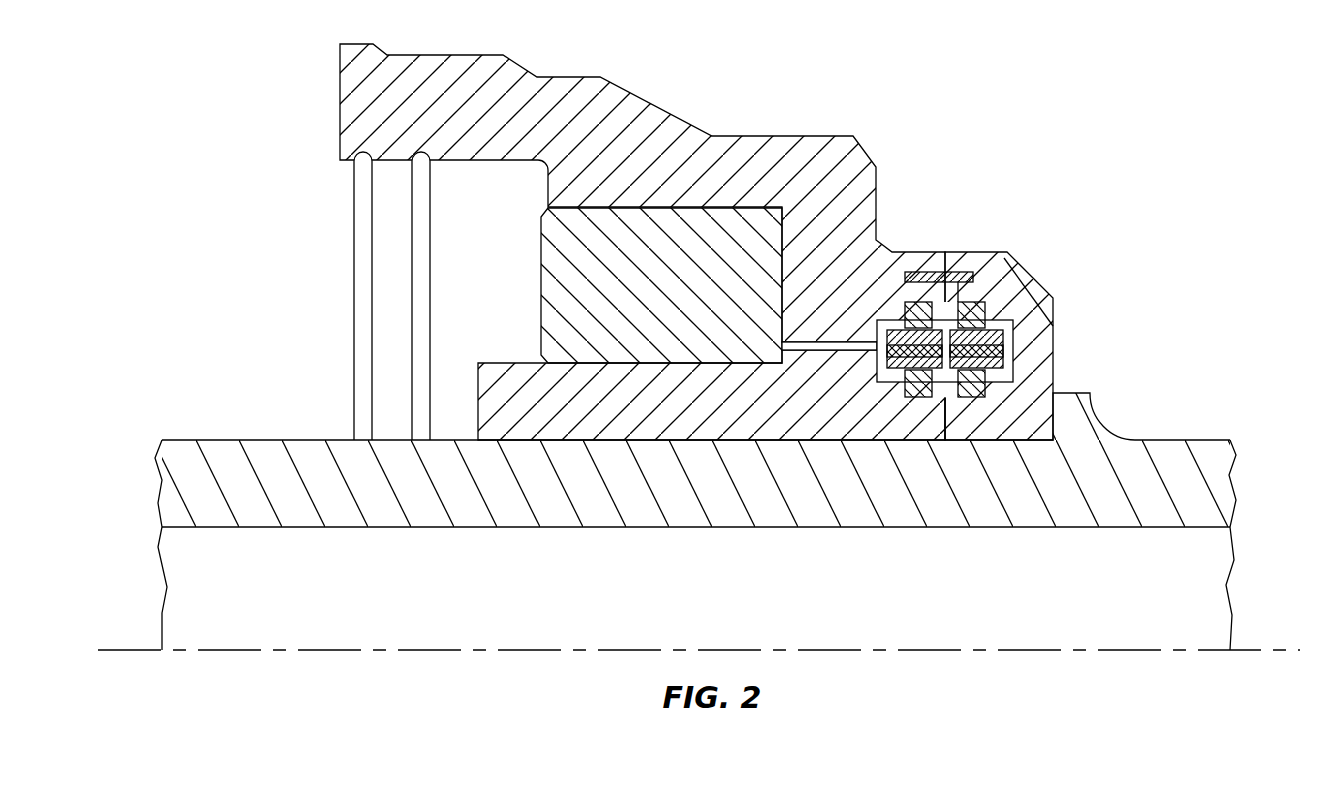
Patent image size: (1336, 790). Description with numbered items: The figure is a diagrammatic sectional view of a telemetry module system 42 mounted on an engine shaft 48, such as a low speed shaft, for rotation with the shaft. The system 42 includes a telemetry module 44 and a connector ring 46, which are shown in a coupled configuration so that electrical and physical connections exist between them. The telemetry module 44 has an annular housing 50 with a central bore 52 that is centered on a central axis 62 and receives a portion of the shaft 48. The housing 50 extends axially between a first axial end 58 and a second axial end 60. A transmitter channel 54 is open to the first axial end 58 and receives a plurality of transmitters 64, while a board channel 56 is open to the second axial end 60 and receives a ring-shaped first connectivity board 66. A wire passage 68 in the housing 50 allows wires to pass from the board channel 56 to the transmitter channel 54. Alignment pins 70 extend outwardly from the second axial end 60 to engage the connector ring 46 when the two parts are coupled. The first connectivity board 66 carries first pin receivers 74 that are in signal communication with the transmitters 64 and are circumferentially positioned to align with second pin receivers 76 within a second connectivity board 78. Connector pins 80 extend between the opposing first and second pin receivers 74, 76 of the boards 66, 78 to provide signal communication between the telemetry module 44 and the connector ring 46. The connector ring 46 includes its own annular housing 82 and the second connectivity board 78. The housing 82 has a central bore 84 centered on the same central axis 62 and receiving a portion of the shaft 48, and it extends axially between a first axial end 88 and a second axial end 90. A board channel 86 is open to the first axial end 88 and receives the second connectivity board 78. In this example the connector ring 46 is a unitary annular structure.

The telemetry module system 42 is at (980, 115).
The telemetry module 44 is at (775, 118).
The connector ring 46 is at (1052, 255).
The engine shaft 48 is at (424, 496).
The annular housing 50 is at (625, 107).
The central bore 52 is at (673, 443).
The transmitter channel 54 is at (657, 212).
The board channel 56 is at (880, 441).
The first axial end 58 is at (338, 140).
The second axial end 60 is at (946, 410).
The central axis 62 is at (1286, 648).
The transmitters 64 is at (654, 305).
The first connectivity board 66 is at (903, 308).
The wire passage 68 is at (830, 342).
The alignment pins 70 is at (959, 274).
The first pin receivers 74 is at (903, 385).
The second pin receivers 76 is at (1015, 333).
The second connectivity board 78 is at (982, 302).
The connector pins 80 is at (1003, 350).
The annular housing 82 is at (1033, 430).
The central bore 84 is at (965, 415).
The board channel 86 is at (973, 392).
The first axial end 88 is at (943, 262).
The second axial end 90 is at (1053, 312).